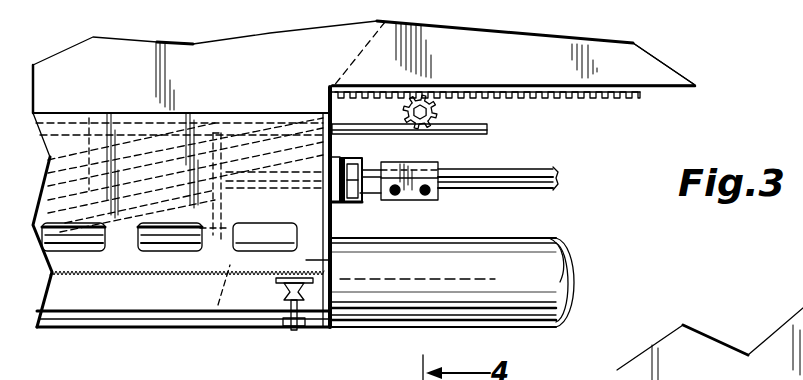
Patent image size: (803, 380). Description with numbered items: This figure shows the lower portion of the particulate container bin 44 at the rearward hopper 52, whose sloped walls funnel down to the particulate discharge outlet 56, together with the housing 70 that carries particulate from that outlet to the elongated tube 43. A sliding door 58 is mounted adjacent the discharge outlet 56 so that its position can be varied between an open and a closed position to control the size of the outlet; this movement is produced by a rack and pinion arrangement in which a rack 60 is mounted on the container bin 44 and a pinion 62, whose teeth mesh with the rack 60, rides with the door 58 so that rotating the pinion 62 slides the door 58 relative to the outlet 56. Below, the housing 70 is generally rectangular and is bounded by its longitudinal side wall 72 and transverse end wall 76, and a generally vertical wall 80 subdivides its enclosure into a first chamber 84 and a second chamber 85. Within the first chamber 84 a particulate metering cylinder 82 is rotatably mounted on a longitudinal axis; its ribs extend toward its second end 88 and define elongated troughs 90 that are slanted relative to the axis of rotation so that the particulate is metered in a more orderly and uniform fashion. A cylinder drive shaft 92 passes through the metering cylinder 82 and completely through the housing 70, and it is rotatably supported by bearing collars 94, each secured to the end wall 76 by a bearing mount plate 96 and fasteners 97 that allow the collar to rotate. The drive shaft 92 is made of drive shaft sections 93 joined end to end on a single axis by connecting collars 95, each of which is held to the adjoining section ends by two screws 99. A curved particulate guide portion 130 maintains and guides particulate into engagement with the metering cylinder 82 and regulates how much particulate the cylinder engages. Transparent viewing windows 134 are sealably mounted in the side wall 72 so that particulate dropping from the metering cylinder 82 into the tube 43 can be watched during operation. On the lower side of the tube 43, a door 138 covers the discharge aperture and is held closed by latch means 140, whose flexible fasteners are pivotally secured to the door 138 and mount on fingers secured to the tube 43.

The elongated tube 43 is at (546, 280).
The particulate container bin 44 is at (664, 90).
The rearward hopper 52 is at (316, 55).
The particulate discharge outlet 56 is at (228, 88).
The sliding door 58 is at (488, 130).
The rack 60 is at (552, 95).
The pinion 62 is at (440, 112).
The housing 70 is at (352, 218).
The longitudinal side wall 72 is at (335, 262).
The transverse end wall 76 is at (335, 232).
The vertical wall 80 is at (213, 249).
The particulate metering cylinder 82 is at (128, 134).
The first chamber 84 is at (107, 255).
The second chamber 85 is at (300, 125).
The second end 88 is at (243, 132).
The elongated troughs 90 is at (82, 125).
The cylinder drive shaft 92 is at (244, 169).
The drive shaft sections 93 is at (268, 207).
The bearing collars 94 is at (362, 165).
The connecting collars 95 is at (438, 164).
The bearing mount plate 96 is at (342, 159).
The fasteners 97 is at (362, 194).
The screws 99 is at (403, 195).
The curved particulate guide portion 130 is at (180, 251).
The transparent viewing windows 134 is at (163, 253).
The door 138 is at (314, 326).
The latch means 140 is at (316, 296).